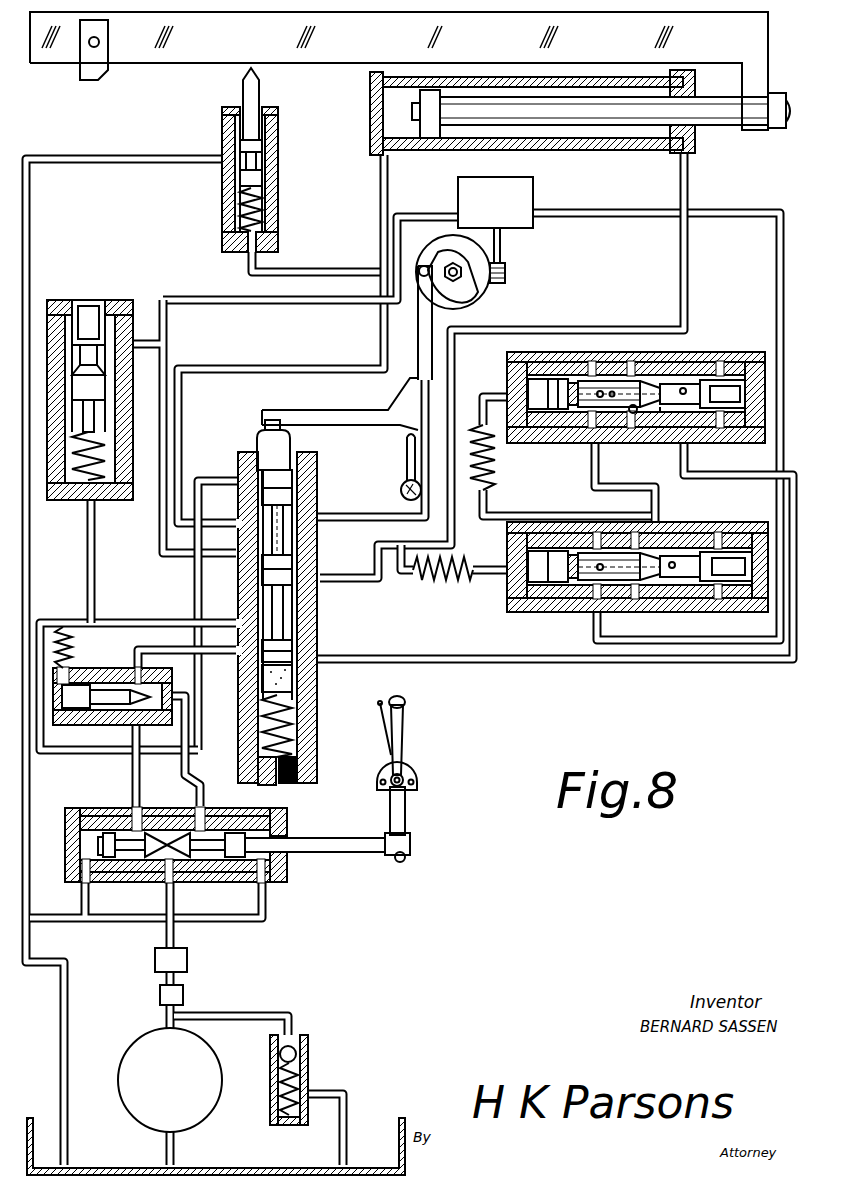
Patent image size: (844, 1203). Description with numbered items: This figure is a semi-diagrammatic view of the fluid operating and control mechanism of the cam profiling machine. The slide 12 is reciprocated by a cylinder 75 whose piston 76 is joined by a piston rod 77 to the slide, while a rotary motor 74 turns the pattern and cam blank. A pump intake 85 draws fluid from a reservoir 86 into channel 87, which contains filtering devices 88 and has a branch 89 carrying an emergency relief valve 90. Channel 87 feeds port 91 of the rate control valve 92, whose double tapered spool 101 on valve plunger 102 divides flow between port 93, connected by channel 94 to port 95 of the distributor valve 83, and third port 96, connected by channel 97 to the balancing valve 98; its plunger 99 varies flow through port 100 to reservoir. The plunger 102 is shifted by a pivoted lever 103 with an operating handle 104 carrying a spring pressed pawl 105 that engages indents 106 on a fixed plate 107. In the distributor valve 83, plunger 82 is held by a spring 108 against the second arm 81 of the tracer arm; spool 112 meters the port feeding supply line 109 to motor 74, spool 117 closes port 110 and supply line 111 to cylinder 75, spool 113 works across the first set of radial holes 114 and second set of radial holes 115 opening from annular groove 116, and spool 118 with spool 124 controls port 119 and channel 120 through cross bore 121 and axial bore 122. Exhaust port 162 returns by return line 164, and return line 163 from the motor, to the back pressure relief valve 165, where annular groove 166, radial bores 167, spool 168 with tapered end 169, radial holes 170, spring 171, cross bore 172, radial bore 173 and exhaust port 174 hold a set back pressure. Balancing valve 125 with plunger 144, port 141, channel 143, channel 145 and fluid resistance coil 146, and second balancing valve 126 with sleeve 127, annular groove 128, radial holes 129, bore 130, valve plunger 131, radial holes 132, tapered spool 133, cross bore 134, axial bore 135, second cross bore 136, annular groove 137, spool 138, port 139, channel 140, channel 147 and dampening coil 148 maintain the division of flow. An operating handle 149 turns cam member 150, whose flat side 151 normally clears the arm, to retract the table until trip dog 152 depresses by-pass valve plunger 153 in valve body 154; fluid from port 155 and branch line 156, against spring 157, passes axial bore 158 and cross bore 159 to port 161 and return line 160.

The slide 12 is at (768, 42).
The rotary motor 74 is at (515, 222).
The cylinder 75 is at (545, 150).
The piston 76 is at (432, 93).
The piston rod 77 is at (590, 105).
The second arm 81 is at (335, 410).
The plunger 82 is at (276, 445).
The distributor valve 83 is at (317, 693).
The intake 85 is at (175, 1145).
The reservoir 86 is at (398, 1130).
The channel 87 is at (175, 940).
The filtering devices 88 is at (187, 958).
The branch 89 is at (240, 1016).
The emergency relief valve 90 is at (308, 1040).
The port 91 is at (162, 862).
The rate control valve 92 is at (287, 876).
The port 93 is at (134, 800).
The channel 94 is at (50, 621).
The port 95 is at (238, 523).
The third port 96 is at (203, 802).
The channel 97 is at (190, 770).
The balancing valve 98 is at (74, 640).
The plunger 99 is at (118, 700).
The port 100 is at (136, 655).
The double tapered spool 101 is at (150, 853).
The valve plunger 102 is at (345, 838).
The pivoted lever 103 is at (405, 802).
The operating handle 104 is at (403, 712).
The spring pressed pawl 105 is at (386, 737).
The indents 106 is at (412, 766).
The fixed plate 107 is at (415, 777).
The spring 108 is at (317, 668).
The supply line 109 is at (438, 659).
The port 110 is at (317, 575).
The supply line 111 is at (378, 585).
The spool 112 is at (264, 683).
The second spool 113 is at (300, 615).
The first set of radial holes 114 is at (238, 652).
The second set of radial holes 115 is at (238, 623).
The annular groove 116 is at (238, 648).
The spool 117 is at (300, 556).
The spool 118 is at (292, 494).
The port 119 is at (222, 481).
The channel 120 is at (182, 395).
The cross bore 121 is at (296, 598).
The axial bore 122 is at (292, 656).
The spool 124 is at (292, 478).
The balancing valve 125 is at (530, 612).
The second balancing valve 126 is at (712, 380).
The sleeve 127 is at (730, 386).
The annular groove 128 is at (660, 420).
The radial holes 129 is at (720, 443).
The bore 130 is at (755, 352).
The valve plunger 131 is at (610, 381).
The radial holes 132 is at (648, 382).
The tapered spool 133 is at (638, 413).
The cross bore 134 is at (683, 384).
The axial bore 135 is at (618, 412).
The second cross bore 136 is at (560, 409).
The annular groove 137 is at (573, 383).
The spool 138 is at (540, 379).
The port 139 is at (590, 443).
The channel 140 is at (618, 487).
The port 141 is at (665, 522).
The channel 143 is at (622, 640).
The plunger 144 is at (712, 522).
The channel 145 is at (490, 570).
The fluid resistance coil 146 is at (440, 582).
The channel 147 is at (498, 392).
The dampening coil 148 is at (490, 490).
The operating handle 149 is at (406, 442).
The cam member 150 is at (401, 490).
The flat side 151 is at (405, 500).
The trip dog 152 is at (84, 70).
The by-pass valve plunger 153 is at (246, 85).
The valve body 154 is at (278, 122).
The port 155 is at (262, 238).
The branch line 156 is at (310, 272).
The spring 157 is at (262, 201).
The axial bore 158 is at (262, 177).
The cross bore 159 is at (262, 146).
The return line 160 is at (200, 159).
The port 161 is at (236, 178).
The port 162 is at (222, 553).
The return line 163 is at (290, 300).
The return line 164 is at (165, 346).
The back pressure relief valve 165 is at (112, 310).
The annular groove 166 is at (133, 332).
The radial bores 167 is at (105, 392).
The spool 168 is at (94, 408).
The tapered end 169 is at (105, 377).
The radial holes 170 is at (92, 302).
The spring 171 is at (85, 300).
The cross bore 172 is at (100, 362).
The radial bore 173 is at (105, 420).
The exhaust port 174 is at (93, 505).